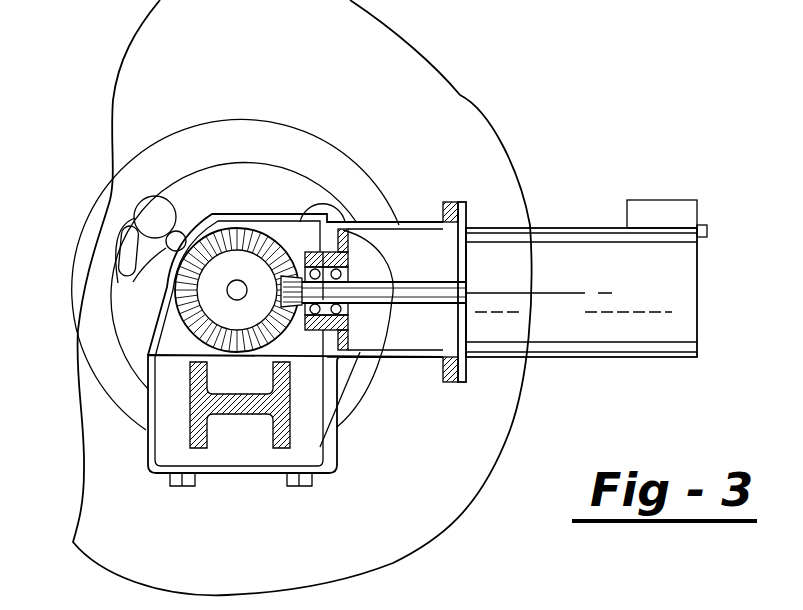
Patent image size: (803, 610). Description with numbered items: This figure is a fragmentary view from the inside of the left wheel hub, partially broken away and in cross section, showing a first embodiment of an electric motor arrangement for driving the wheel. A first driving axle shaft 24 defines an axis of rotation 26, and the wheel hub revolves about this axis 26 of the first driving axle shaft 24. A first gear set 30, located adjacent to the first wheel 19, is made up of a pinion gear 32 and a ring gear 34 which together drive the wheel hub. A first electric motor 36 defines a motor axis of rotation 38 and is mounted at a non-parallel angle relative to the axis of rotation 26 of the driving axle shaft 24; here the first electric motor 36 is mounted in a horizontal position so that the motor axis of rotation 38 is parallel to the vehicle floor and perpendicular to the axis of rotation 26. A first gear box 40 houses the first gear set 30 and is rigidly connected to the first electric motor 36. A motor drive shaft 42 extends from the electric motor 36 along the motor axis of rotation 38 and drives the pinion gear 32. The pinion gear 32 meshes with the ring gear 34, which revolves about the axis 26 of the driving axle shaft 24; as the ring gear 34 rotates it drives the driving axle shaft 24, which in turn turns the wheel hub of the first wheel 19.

The first wheel 19 is at (155, 528).
The first driving axle shaft 24 is at (262, 290).
The axis of rotation 26 is at (228, 291).
The first gear set 30 is at (281, 342).
The pinion gear 32 is at (285, 222).
The ring gear 34 is at (234, 232).
The first electric motor 36 is at (573, 238).
The motor axis of rotation 38 is at (517, 292).
The first gear box 40 is at (148, 430).
The motor drive shaft 42 is at (395, 240).